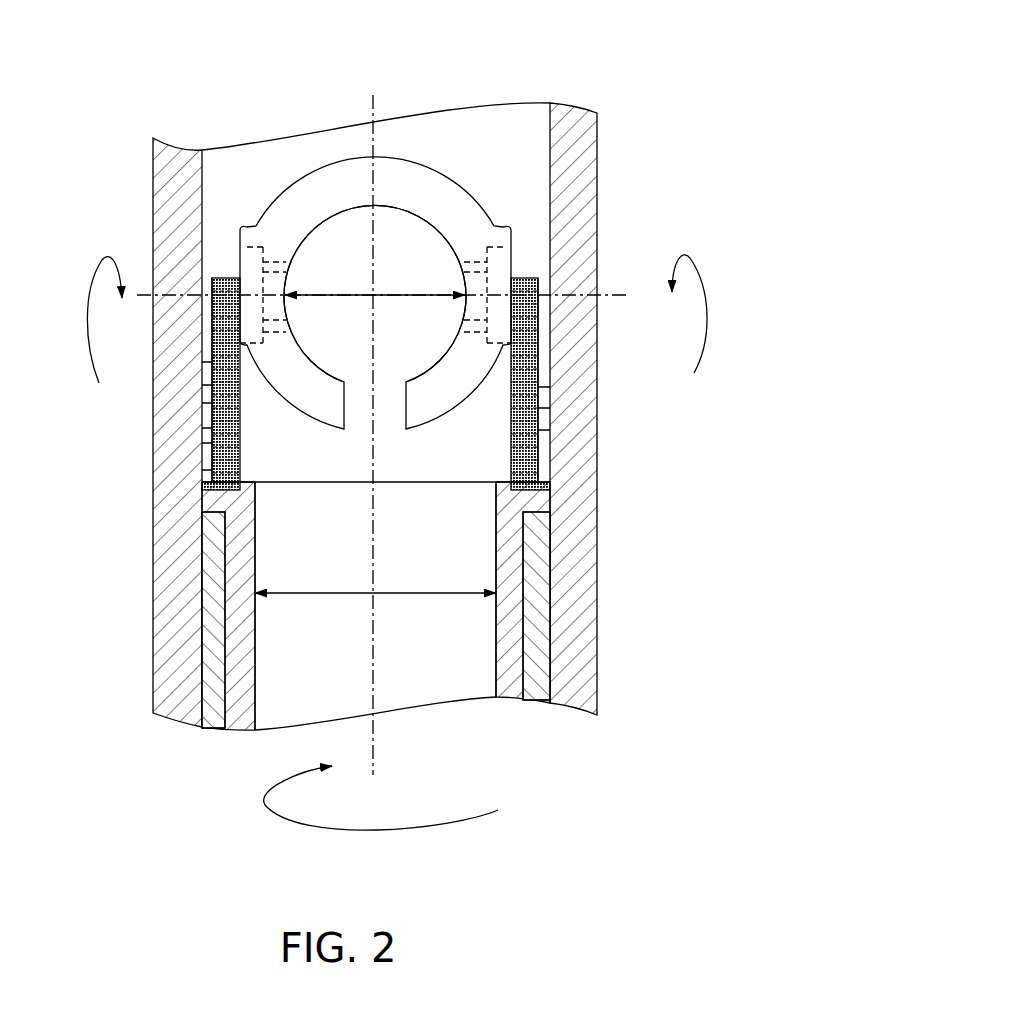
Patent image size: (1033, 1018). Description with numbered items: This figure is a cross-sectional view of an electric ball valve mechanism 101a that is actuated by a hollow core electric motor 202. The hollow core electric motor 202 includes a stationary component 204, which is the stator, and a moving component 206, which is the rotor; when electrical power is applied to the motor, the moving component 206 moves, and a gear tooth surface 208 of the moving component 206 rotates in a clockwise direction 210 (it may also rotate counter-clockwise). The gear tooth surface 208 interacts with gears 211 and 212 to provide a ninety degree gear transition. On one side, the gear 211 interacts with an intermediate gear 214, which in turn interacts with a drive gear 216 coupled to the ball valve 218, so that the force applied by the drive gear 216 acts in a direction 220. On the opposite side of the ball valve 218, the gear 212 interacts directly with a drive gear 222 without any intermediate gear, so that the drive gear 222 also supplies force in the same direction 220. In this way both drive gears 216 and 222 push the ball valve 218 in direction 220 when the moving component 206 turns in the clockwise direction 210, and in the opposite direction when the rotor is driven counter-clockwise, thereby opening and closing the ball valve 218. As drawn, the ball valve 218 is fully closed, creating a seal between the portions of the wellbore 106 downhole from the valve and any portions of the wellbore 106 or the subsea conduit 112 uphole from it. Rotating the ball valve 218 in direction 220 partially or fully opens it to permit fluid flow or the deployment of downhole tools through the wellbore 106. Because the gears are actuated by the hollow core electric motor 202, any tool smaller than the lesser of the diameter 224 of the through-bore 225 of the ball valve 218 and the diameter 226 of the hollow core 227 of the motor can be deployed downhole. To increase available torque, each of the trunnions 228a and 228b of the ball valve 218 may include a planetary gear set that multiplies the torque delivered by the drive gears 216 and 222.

The electric ball valve mechanism 101a is at (420, 370).
The subsea conduit 112 is at (597, 183).
The wellbore 106 is at (445, 640).
The hollow core electric motor 202 is at (305, 606).
The stationary component 204 is at (215, 622).
The moving component 206 is at (240, 700).
The gear tooth surface 208 is at (202, 487).
The clockwise direction 210 is at (300, 826).
The gear 211 is at (212, 460).
The gear 212 is at (540, 448).
The intermediate gear 214 is at (212, 373).
The drive gear 216 is at (212, 287).
The ball valve 218 is at (277, 217).
The direction 220 is at (88, 302).
The drive gear 222 is at (540, 312).
The diameter 224 is at (352, 293).
The through-bore 225 is at (436, 228).
The diameter 226 is at (340, 592).
The hollow core 227 is at (408, 667).
The trunnion 228a is at (245, 256).
The trunnion 228b is at (499, 262).